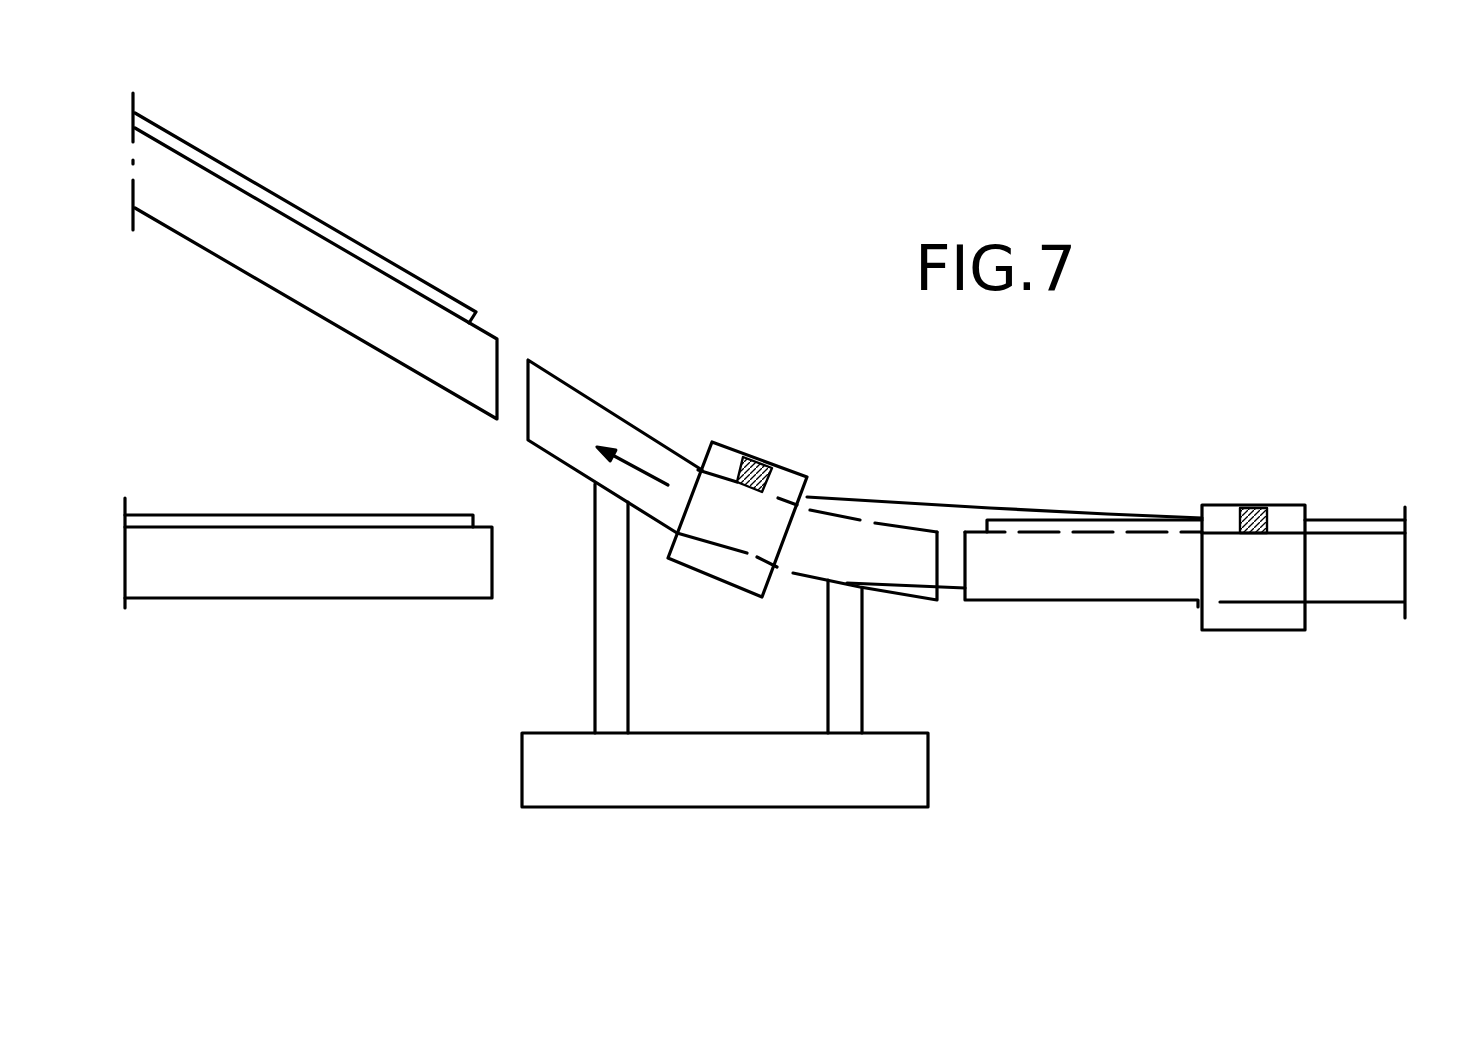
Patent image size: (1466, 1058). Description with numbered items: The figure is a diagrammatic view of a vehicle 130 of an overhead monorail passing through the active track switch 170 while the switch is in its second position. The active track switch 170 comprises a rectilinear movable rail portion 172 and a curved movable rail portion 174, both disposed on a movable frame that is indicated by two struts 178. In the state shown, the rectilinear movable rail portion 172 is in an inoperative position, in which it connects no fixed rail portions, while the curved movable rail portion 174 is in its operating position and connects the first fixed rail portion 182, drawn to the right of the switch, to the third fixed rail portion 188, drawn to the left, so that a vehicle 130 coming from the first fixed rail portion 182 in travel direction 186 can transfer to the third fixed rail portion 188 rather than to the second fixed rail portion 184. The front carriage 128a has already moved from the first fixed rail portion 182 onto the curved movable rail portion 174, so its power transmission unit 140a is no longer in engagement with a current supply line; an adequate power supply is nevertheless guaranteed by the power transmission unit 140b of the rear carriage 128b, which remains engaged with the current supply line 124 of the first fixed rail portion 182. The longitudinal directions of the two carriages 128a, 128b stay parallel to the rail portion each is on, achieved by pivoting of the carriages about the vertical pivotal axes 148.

The current supply line 124 is at (373, 263).
The front carriage 128a is at (807, 478).
The rear carriage 128b is at (1282, 513).
The vehicle 130 is at (970, 497).
The power transmission unit 140a is at (763, 462).
The power transmission unit 140b is at (1247, 507).
The vertical pivotal axis 148 is at (782, 545).
The active track switch 170 is at (675, 438).
The rectilinear movable rail portion 172 is at (905, 777).
The curved movable rail portion 174 is at (560, 410).
The strut 178 is at (615, 683).
The first fixed rail portion 182 is at (1357, 580).
The second fixed rail portion 184 is at (307, 577).
The travel direction 186 is at (632, 463).
The third fixed rail portion 188 is at (307, 272).